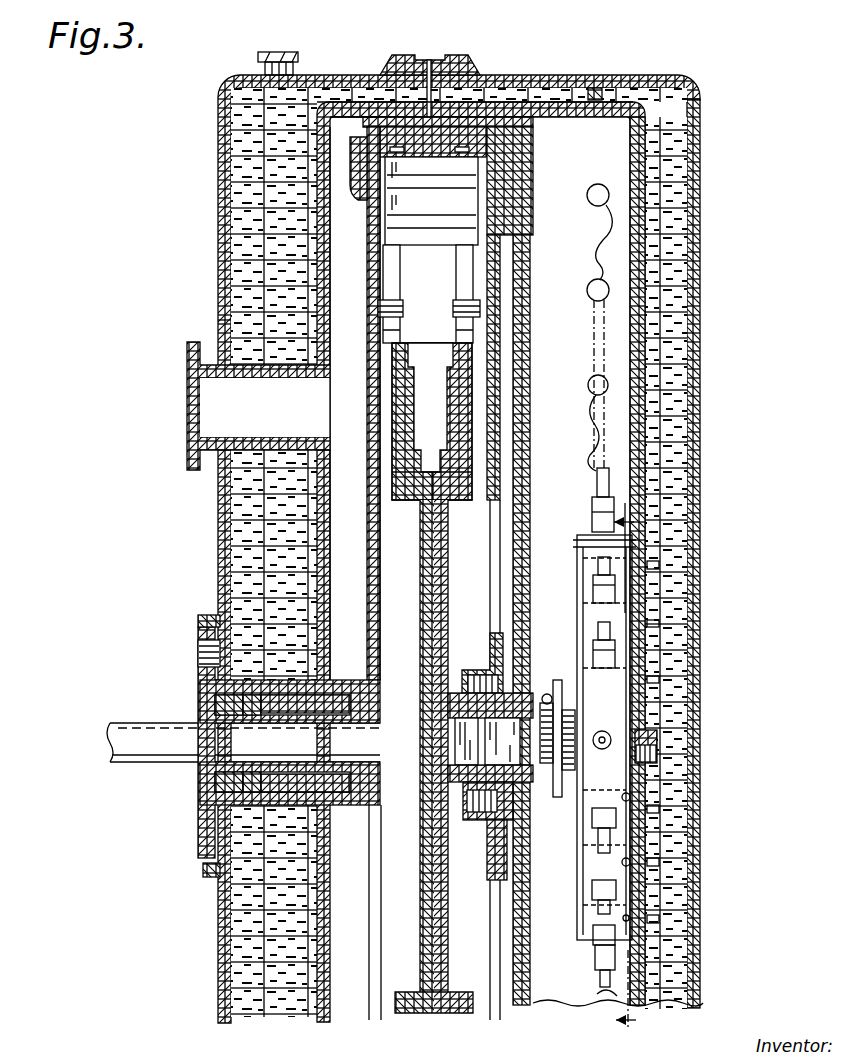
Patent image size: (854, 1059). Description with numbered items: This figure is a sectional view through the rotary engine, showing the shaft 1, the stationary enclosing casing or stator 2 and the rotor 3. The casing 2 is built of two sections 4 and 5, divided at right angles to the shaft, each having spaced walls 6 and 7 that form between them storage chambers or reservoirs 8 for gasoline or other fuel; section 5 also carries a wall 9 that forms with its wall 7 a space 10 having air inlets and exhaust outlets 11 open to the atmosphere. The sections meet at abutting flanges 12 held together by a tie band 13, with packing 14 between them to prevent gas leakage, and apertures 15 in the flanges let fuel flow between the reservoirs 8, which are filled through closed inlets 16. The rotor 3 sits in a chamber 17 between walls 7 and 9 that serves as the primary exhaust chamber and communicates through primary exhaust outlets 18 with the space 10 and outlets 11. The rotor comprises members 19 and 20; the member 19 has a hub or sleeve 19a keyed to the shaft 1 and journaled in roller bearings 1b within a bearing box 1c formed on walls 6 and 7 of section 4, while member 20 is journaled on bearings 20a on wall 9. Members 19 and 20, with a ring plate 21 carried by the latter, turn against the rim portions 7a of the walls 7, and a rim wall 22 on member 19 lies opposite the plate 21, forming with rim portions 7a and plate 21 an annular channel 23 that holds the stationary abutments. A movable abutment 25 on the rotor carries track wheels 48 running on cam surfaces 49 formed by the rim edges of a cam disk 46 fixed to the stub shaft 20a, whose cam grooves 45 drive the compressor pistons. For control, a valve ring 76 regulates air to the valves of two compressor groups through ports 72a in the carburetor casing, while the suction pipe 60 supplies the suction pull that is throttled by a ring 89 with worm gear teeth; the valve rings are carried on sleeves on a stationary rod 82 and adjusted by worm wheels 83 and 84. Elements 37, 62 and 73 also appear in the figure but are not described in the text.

The shaft 1 is at (129, 724).
The roller bearings 1b is at (335, 690).
The bearing box 1c is at (288, 695).
The stationary enclosing casing 2 is at (221, 583).
The rotor 3 is at (364, 272).
The casing section 4 is at (221, 145).
The casing section 5 is at (697, 136).
The wall 6 is at (222, 321).
The wall 7 is at (333, 352).
The rim portions 7a is at (343, 105).
The storage chambers 8 is at (229, 250).
The wall 9 is at (527, 274).
The space 10 is at (620, 303).
The air inlets and exhaust outlets 11 is at (600, 91).
The abutting flanges 12 is at (424, 60).
The tie band 13 is at (380, 58).
The packing 14 is at (462, 62).
The apertures 15 is at (488, 72).
The inlets 16 is at (286, 52).
The chamber 17 is at (347, 426).
The primary exhaust outlets 18 is at (198, 402).
The member 19 is at (379, 594).
The hub or sleeve 19a is at (358, 767).
The member 20 is at (490, 578).
The bearings 20a is at (480, 677).
The ring plate 21 is at (585, 195).
The rim wall 22 is at (353, 160).
The annular channel 23 is at (517, 146).
The movable abutment 25 is at (431, 201).
The stop block 37 is at (206, 878).
The cam grooves 45 is at (408, 499).
The cam disk 46 is at (420, 643).
The track wheels 48 is at (452, 323).
The cam surfaces 49 is at (421, 366).
The suction pipe 60 is at (593, 515).
The valve 62 is at (597, 855).
The ports 72a is at (631, 798).
The pin 73 is at (657, 566).
The valve ring 76 is at (578, 568).
The stationary rod 82 is at (657, 742).
The worm wheel 83 is at (577, 770).
The worm wheel 84 is at (547, 772).
The ring 89 is at (556, 686).